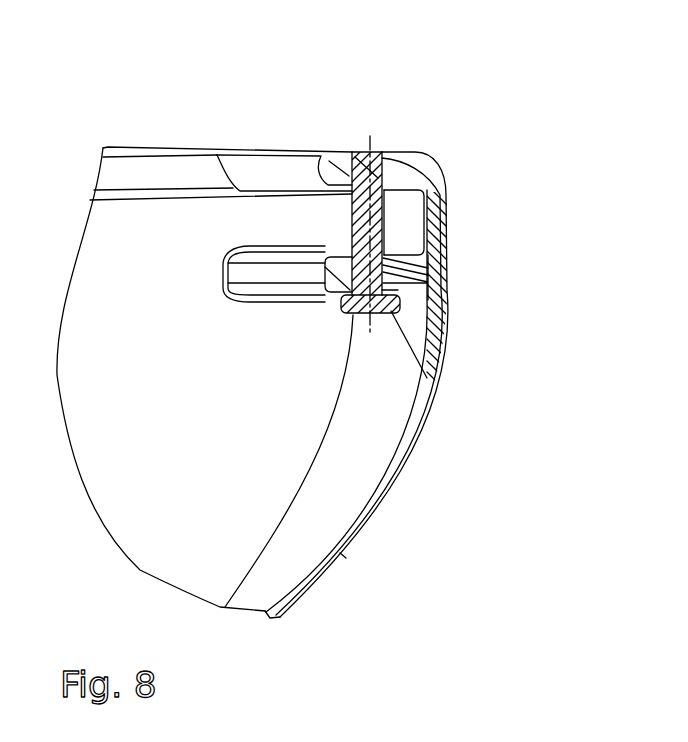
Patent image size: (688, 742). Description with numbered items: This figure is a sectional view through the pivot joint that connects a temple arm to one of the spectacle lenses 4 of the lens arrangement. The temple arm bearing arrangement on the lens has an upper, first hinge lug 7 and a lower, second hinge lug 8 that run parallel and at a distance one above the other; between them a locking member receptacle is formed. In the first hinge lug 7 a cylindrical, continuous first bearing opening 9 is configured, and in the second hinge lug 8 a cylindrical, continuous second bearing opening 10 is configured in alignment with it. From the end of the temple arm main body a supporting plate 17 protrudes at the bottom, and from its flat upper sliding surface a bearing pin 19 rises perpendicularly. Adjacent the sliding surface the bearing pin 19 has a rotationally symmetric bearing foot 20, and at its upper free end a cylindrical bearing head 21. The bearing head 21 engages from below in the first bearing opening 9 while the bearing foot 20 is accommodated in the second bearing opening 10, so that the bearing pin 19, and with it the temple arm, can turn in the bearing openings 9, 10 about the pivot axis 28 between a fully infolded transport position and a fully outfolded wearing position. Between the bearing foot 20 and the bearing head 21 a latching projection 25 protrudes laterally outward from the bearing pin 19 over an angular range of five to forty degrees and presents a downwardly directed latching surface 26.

The spectacle lens 4 is at (375, 425).
The first hinge lug 7 is at (352, 178).
The second hinge lug 8 is at (340, 263).
The first bearing opening 9 is at (378, 153).
The second bearing opening 10 is at (390, 291).
The supporting plate 17 is at (392, 305).
The bearing pin 19 is at (384, 204).
The bearing foot 20 is at (386, 286).
The bearing head 21 is at (413, 154).
The latching projection 25 is at (383, 245).
The latching surface 26 is at (384, 280).
The pivot axis 28 is at (372, 152).